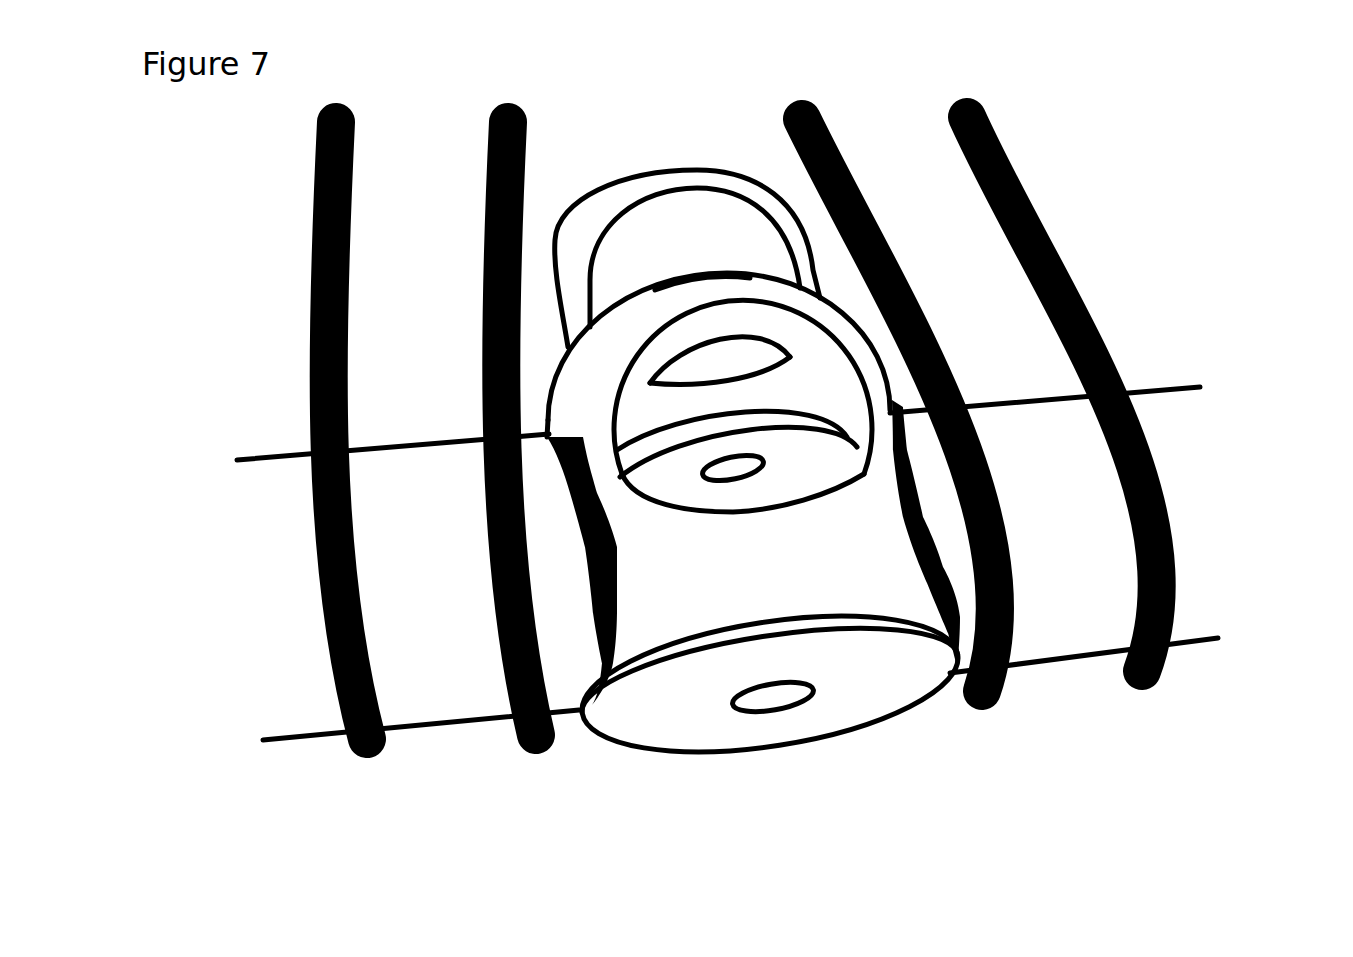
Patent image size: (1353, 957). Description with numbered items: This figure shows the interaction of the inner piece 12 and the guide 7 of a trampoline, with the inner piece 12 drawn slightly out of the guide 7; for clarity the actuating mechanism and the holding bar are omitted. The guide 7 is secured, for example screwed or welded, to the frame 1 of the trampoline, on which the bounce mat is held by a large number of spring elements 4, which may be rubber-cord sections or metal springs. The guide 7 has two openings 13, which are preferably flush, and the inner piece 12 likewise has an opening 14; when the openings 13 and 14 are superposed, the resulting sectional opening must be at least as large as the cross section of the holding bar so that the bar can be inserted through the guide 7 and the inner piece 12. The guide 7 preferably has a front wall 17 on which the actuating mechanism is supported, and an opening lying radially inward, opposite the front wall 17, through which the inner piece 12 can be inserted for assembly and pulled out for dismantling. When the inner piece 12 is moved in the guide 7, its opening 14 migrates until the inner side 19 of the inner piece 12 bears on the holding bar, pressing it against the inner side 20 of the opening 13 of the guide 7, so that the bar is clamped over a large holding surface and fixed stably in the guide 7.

The frame 1 is at (1222, 433).
The spring elements 4 is at (313, 353).
The guide 7 is at (638, 763).
The inner piece 12 is at (575, 237).
The openings 13 is at (823, 508).
The opening 14 is at (687, 196).
The front wall 17 is at (863, 703).
The inner side 19 is at (642, 237).
The inner side 20 is at (827, 367).